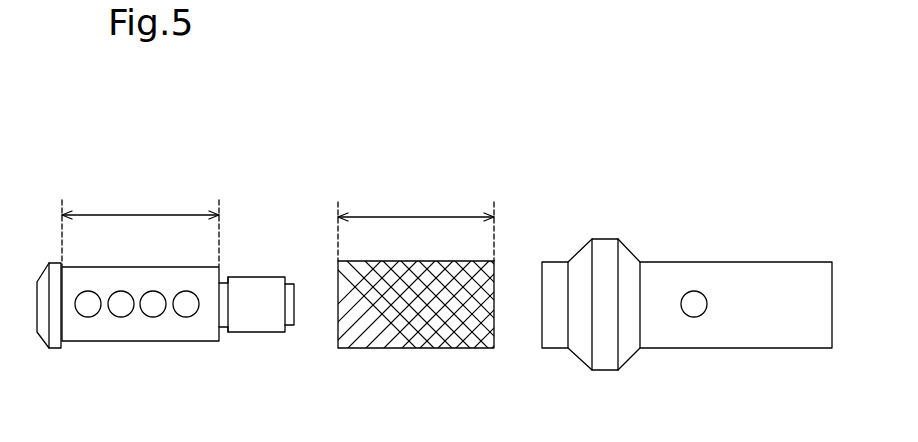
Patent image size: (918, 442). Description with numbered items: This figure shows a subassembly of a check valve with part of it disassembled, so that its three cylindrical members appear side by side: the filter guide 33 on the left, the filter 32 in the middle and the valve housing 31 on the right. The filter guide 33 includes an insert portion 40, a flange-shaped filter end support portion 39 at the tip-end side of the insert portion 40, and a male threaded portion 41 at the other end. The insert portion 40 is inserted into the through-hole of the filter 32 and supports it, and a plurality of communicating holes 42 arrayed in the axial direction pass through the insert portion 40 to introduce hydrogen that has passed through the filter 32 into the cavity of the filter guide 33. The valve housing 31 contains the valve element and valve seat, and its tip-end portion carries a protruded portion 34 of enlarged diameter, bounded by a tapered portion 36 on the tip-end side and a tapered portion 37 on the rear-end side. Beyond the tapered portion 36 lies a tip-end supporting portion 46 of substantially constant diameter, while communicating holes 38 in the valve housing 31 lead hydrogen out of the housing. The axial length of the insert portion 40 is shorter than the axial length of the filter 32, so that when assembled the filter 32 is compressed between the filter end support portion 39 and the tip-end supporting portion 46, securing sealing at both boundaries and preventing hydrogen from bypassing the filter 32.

The valve housing 31 is at (755, 243).
The filter 32 is at (405, 341).
The filter guide 33 is at (241, 216).
The protruded portion 34 is at (606, 238).
The tapered portion 36 is at (578, 251).
The tapered portion 37 is at (632, 253).
The communicating holes 38 is at (697, 312).
The filter end support portion 39 is at (57, 264).
The insert portion 40 is at (168, 330).
The male threaded portion 41 is at (250, 318).
The communicating holes 42 is at (121, 310).
The tip-end supporting portion 46 is at (556, 262).